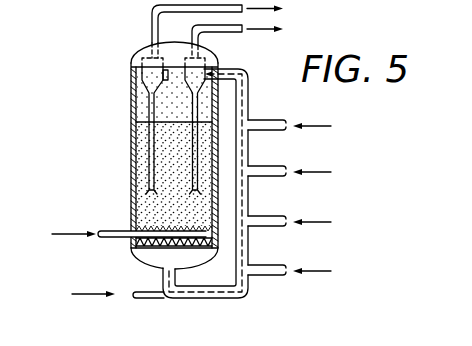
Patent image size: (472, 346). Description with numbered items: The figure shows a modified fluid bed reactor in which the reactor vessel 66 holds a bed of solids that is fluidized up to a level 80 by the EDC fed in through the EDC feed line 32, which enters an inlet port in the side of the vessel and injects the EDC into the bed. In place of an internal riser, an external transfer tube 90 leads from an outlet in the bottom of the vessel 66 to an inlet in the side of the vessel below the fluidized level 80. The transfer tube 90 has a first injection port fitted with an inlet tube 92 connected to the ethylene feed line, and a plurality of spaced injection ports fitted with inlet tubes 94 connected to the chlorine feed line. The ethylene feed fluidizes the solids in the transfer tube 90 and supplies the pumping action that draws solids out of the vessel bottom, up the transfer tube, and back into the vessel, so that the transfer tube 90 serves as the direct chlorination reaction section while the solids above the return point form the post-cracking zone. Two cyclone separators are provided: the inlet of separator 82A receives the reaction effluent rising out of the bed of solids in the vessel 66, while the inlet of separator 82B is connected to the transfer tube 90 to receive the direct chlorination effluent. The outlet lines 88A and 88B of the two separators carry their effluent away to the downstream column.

The EDC feed line 32 is at (112, 231).
The vessel 66 is at (131, 156).
The level 80 is at (144, 120).
The cyclone separator 82A is at (144, 78).
The cyclone separator 82B is at (206, 61).
The outlet line 88A is at (152, 25).
The outlet line 88B is at (212, 33).
The transfer tube 90 is at (243, 291).
The inlet tube 92 is at (152, 301).
The inlet tubes 94 is at (266, 167).